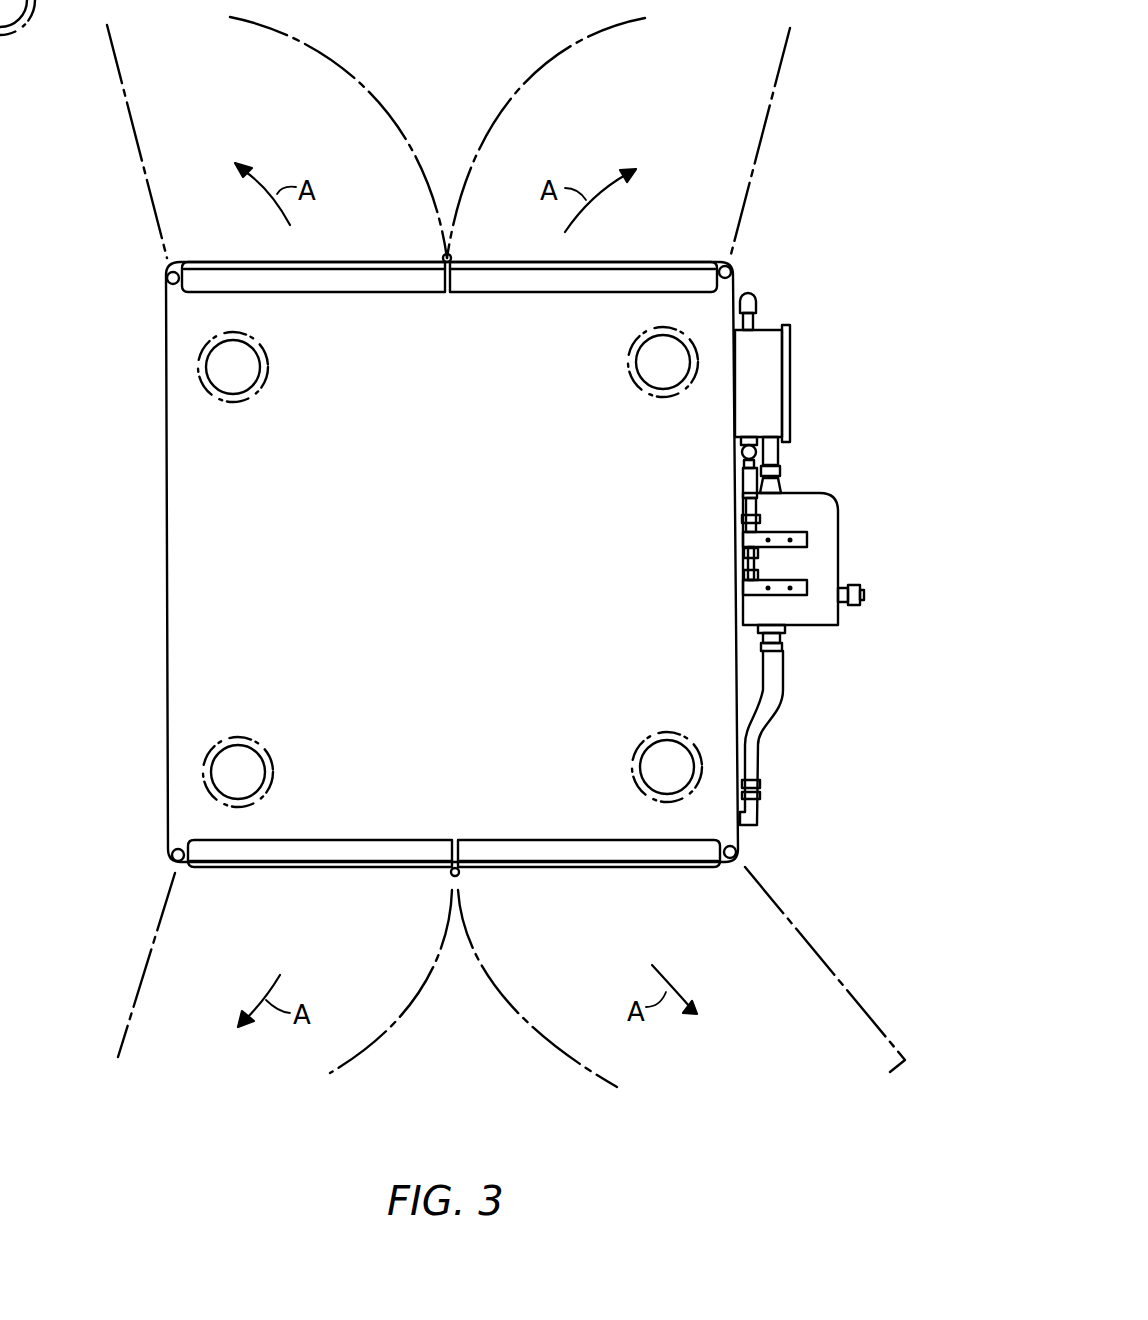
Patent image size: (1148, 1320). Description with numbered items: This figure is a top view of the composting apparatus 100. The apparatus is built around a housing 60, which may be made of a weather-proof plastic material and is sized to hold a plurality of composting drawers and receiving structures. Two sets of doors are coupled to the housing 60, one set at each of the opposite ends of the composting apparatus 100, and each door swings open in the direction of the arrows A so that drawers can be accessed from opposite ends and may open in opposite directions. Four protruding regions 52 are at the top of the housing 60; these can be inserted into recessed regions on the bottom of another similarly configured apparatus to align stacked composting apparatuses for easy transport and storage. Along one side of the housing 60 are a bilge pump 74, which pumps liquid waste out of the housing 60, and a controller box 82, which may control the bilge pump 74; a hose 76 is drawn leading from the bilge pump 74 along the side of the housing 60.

The protruding region 52 is at (672, 375).
The housing 60 is at (520, 488).
The bilge pump 74 is at (828, 545).
The conduit 76 is at (775, 693).
The controller box 82 is at (771, 397).
The composting apparatus 100 is at (822, 788).